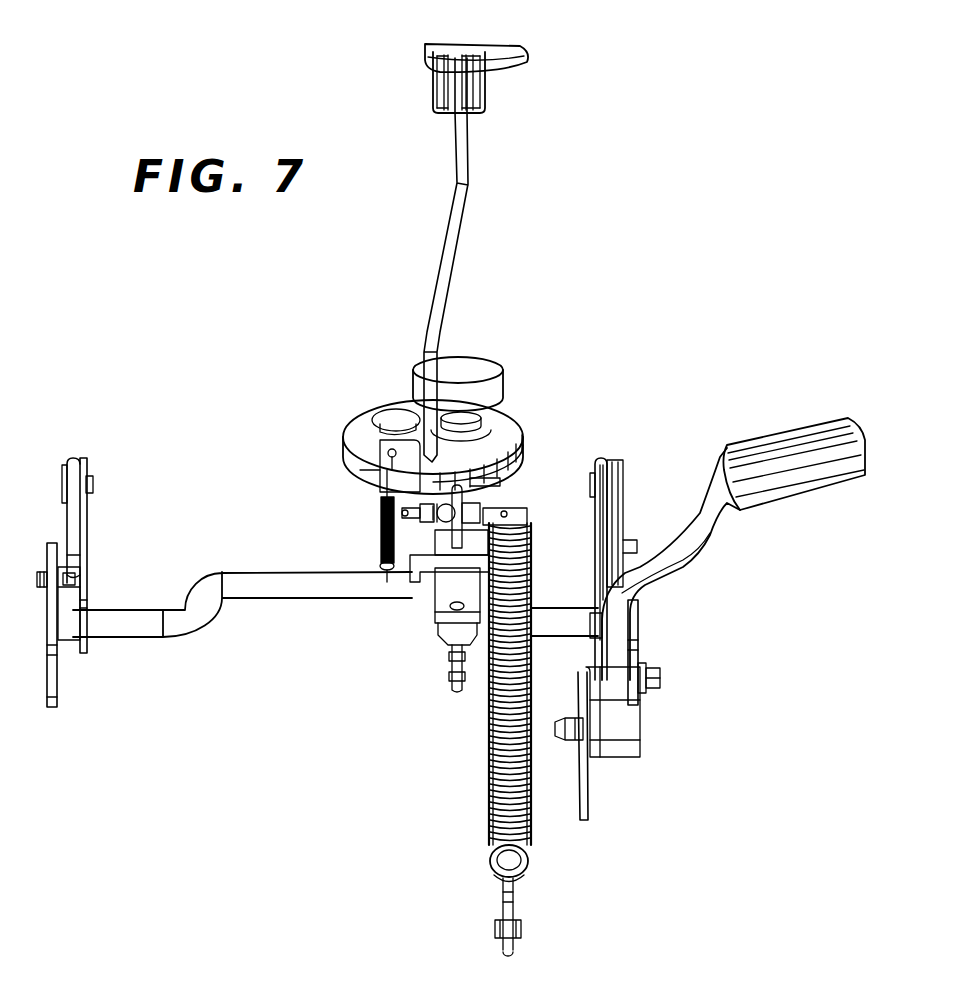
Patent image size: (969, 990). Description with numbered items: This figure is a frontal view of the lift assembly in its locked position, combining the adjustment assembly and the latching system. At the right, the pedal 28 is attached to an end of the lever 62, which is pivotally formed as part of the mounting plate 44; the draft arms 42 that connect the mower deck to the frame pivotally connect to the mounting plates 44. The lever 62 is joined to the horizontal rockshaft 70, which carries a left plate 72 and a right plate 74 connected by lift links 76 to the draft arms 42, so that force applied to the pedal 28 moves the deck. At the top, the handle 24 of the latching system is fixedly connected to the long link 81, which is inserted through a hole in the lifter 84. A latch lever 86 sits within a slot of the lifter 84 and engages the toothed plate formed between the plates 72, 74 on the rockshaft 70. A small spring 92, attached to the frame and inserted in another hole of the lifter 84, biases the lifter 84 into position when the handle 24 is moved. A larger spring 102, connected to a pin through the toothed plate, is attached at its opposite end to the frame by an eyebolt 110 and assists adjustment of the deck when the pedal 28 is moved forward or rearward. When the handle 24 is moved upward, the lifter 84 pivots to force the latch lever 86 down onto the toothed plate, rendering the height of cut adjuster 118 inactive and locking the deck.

The handle 24 is at (508, 50).
The pedal 28 is at (805, 426).
The draft arms 42 is at (54, 688).
The mounting plates 44 is at (583, 802).
The lever 62 is at (683, 552).
The rockshaft 70 is at (267, 573).
The left plate 72 is at (596, 516).
The right plate 74 is at (86, 508).
The lift links 76 is at (75, 538).
The link 81 is at (463, 208).
The lifter 84 is at (428, 577).
The latch lever 86 is at (440, 628).
The spring 92 is at (378, 519).
The spring 102 is at (488, 754).
The eyebolt 110 is at (502, 908).
The height of cut adjuster 118 is at (538, 394).